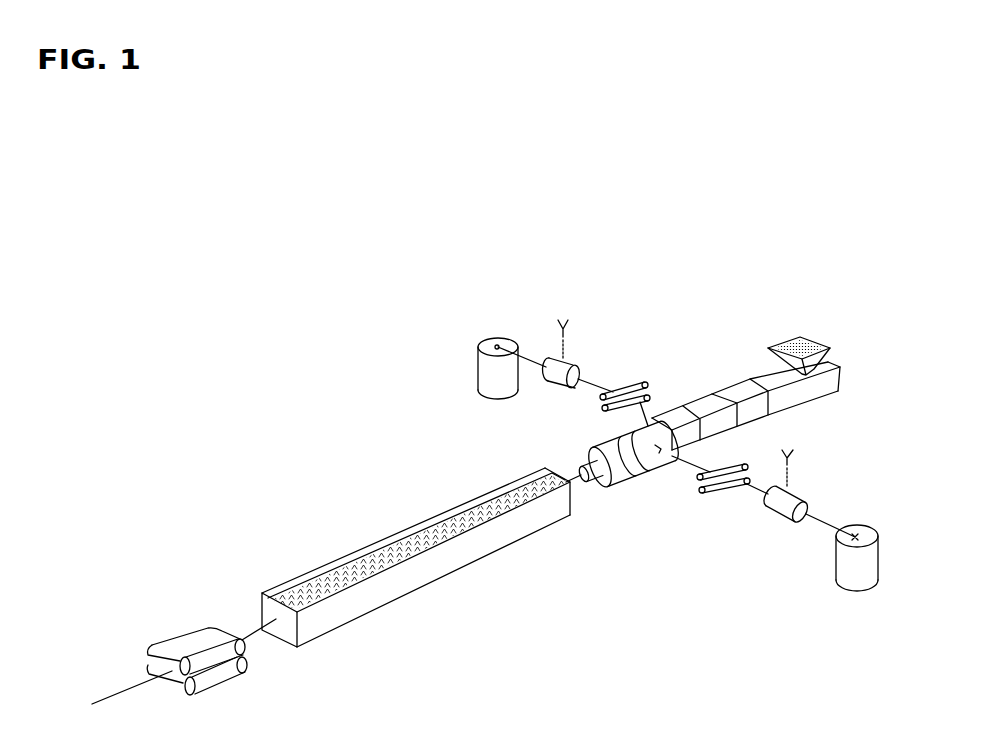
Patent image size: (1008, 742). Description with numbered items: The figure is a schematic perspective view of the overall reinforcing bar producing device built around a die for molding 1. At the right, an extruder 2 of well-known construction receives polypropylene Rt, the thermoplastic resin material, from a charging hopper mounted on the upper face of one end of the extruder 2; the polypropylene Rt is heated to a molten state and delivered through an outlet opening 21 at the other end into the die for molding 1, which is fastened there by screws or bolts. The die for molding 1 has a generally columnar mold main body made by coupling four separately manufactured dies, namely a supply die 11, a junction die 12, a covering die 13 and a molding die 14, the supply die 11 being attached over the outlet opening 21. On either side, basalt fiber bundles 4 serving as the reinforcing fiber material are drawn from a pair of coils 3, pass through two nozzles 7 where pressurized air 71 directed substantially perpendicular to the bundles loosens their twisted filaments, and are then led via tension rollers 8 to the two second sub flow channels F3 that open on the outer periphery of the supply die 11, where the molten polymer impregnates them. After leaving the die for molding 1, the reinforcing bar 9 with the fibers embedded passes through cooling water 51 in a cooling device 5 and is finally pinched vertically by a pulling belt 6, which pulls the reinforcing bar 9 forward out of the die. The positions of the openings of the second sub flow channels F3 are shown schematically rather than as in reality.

The die for molding 1 is at (616, 493).
The supply die 11 is at (662, 452).
The junction die 12 is at (620, 433).
The covering die 13 is at (621, 482).
The molding die 14 is at (590, 483).
The extruder 2 is at (755, 379).
The outlet opening 21 is at (824, 343).
The polypropylene Rt is at (803, 339).
The coils 3 is at (478, 371).
The basalt fiber bundles 4 is at (593, 383).
The cooling device 5 is at (416, 571).
The cooling water 51 is at (366, 568).
The pulling belt 6 is at (188, 645).
The nozzles 7 is at (556, 366).
The pressurized air 71 is at (568, 340).
The tension rollers 8 is at (627, 392).
The reinforcing bar 9 is at (113, 688).
The second sub flow channels F3 is at (650, 420).